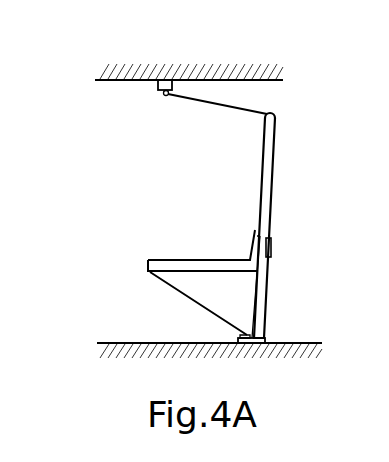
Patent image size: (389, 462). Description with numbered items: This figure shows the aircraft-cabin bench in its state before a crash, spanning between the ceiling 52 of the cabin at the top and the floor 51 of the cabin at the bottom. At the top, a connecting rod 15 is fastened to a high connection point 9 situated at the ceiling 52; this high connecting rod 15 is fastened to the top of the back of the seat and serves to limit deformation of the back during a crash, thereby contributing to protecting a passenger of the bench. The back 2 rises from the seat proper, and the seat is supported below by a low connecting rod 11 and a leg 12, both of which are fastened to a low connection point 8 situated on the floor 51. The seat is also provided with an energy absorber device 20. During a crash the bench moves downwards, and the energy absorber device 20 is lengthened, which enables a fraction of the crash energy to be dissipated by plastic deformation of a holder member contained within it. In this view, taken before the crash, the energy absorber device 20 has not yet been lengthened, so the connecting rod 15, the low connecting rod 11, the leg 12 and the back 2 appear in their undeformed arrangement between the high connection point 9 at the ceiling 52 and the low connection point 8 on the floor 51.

The ceiling 52 is at (106, 74).
The floor 51 is at (118, 343).
The high connection point 9 is at (164, 93).
The connecting rod 15 is at (221, 107).
The post 2 is at (273, 170).
The leg 12 is at (262, 308).
The energy absorber device 20 is at (271, 248).
The low connecting rod 11 is at (193, 262).
The low connection point 8 is at (266, 340).